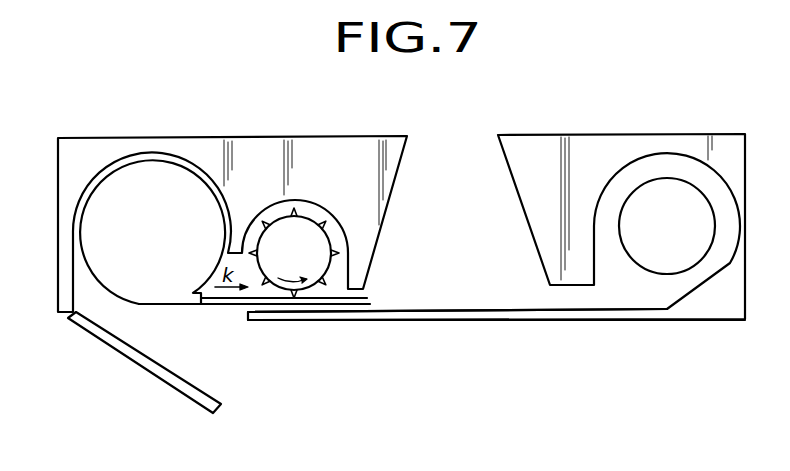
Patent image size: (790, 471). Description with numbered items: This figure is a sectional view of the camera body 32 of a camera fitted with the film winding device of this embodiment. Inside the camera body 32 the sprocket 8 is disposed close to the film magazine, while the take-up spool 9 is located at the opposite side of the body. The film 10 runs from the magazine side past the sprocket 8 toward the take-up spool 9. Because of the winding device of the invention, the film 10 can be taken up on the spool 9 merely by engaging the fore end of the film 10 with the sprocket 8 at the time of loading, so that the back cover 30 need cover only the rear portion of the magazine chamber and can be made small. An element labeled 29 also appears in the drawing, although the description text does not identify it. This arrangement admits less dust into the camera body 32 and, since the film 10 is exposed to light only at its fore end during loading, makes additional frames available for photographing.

The roller 29 is at (148, 190).
The sprocket 8 is at (302, 228).
The take-up spool 9 is at (660, 198).
The film 10 is at (226, 305).
The back cover 30 is at (177, 385).
The camera body 32 is at (407, 313).